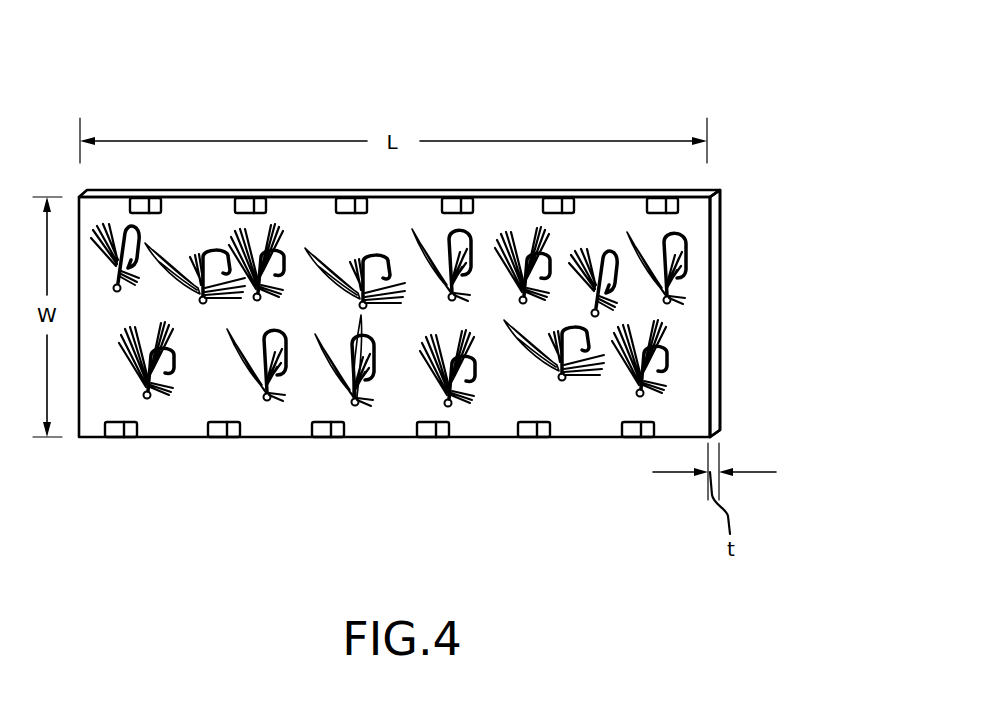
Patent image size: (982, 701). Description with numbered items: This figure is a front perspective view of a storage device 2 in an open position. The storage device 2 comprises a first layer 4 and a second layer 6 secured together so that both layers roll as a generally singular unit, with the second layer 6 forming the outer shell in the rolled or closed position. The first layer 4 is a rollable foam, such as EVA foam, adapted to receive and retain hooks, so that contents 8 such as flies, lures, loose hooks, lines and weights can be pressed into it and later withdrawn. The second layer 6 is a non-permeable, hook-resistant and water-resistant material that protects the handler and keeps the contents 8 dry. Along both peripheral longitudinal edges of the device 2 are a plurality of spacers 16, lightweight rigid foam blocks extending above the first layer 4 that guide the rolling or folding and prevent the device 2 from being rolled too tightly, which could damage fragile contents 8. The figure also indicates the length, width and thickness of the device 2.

The storage device 2 is at (443, 291).
The first layer 4 is at (700, 315).
The second layer 6 is at (720, 222).
The contents 8 is at (437, 390).
The spacers 16 is at (342, 195).